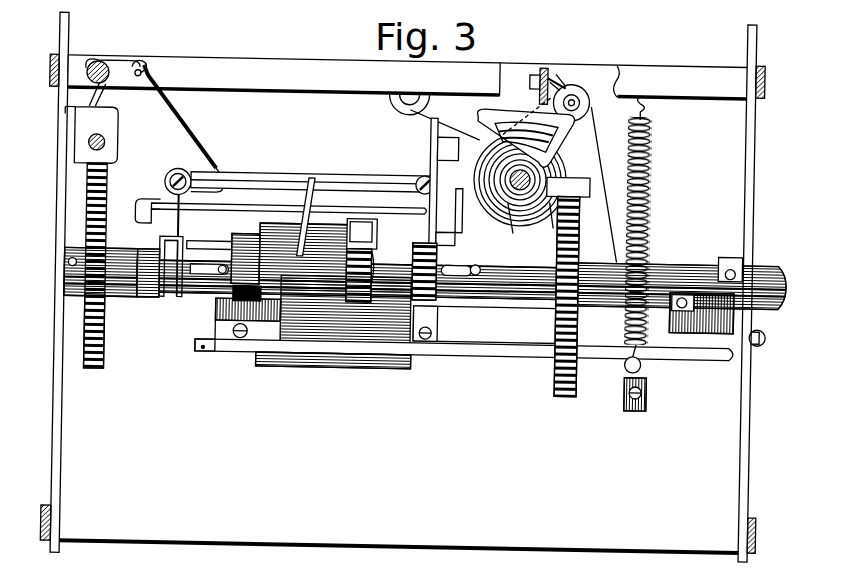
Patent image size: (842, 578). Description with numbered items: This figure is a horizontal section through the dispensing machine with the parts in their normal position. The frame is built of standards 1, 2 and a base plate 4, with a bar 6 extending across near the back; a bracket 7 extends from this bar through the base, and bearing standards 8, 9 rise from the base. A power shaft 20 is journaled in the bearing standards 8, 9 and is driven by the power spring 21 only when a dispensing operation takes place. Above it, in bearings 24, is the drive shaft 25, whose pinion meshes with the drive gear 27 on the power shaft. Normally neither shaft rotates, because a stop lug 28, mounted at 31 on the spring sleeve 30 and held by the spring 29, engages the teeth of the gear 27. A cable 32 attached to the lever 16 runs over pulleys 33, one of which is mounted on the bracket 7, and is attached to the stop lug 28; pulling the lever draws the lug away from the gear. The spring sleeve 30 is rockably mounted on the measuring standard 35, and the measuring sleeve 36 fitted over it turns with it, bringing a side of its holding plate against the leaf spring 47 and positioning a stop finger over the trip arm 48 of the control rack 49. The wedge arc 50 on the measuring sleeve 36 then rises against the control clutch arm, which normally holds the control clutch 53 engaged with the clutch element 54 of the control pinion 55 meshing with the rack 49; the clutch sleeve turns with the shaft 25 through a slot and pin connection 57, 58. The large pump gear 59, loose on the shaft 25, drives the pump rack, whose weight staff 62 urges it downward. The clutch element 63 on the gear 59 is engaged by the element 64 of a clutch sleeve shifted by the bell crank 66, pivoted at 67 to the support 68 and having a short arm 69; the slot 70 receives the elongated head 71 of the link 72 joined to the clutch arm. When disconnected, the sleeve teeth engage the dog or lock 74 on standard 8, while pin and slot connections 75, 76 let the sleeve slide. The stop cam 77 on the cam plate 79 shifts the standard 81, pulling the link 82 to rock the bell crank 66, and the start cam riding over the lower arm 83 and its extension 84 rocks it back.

The frame standard 1 is at (44, 524).
The frame standard 2 is at (46, 74).
The base plate 4 is at (462, 548).
The bar 6 is at (270, 66).
The bracket 7 is at (540, 66).
The bearing standard 8 is at (218, 340).
The bearing standard 9 is at (690, 314).
The lever 16 is at (628, 364).
The power shaft 20 is at (516, 306).
The power spring 21 is at (330, 356).
The bearings 24 is at (722, 252).
The drive shaft 25 is at (655, 262).
The drive gear 27 is at (563, 394).
The stop lug 28 is at (585, 195).
The spring 29 is at (472, 174).
The spring sleeve 30 is at (524, 198).
The stop lug mounting 31 is at (650, 190).
The cable 32 is at (606, 185).
The pulleys 33 is at (404, 113).
The measuring standard 35 is at (512, 232).
The measuring sleeve 36 is at (552, 226).
The leaf spring 47 is at (548, 66).
The trip arm 48 is at (450, 245).
The control rack 49 is at (358, 222).
The wedge arc 50 is at (560, 136).
The control clutch 53 is at (418, 194).
The clutch element 54 is at (372, 252).
The control pinion 55 is at (340, 262).
The slot 57 is at (456, 264).
The pin 58 is at (480, 266).
The pump gear 59 is at (94, 374).
The weight staff 62 is at (102, 146).
The clutch element 63 is at (115, 303).
The clutch element 64 is at (146, 304).
The bell crank 66 is at (150, 226).
The pivot 67 is at (170, 180).
The support 68 is at (262, 178).
The short arm 69 is at (214, 178).
The slot 70 is at (150, 211).
The elongated head 71 is at (182, 210).
The link 72 is at (310, 180).
The dog or lock 74 is at (262, 344).
The pin 75 is at (204, 296).
The slot 76 is at (190, 300).
The stop cam 77 is at (72, 116).
The cam plate 79 is at (109, 266).
The standard 81 is at (94, 66).
The link 82 is at (175, 116).
The lower arm 83 is at (86, 100).
The extension 84 is at (140, 68).